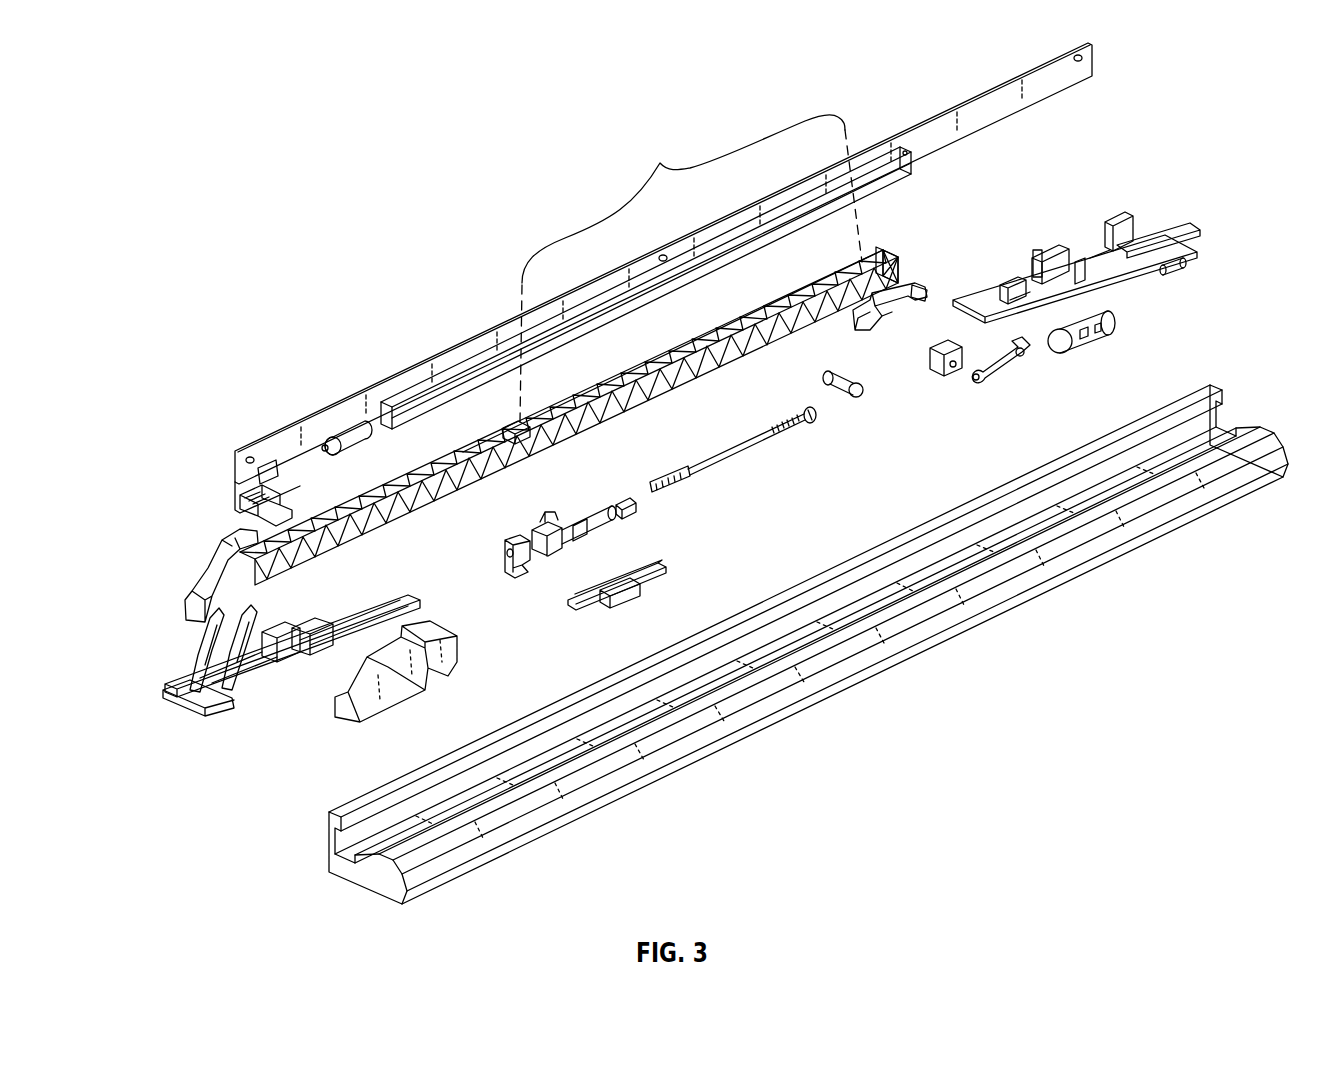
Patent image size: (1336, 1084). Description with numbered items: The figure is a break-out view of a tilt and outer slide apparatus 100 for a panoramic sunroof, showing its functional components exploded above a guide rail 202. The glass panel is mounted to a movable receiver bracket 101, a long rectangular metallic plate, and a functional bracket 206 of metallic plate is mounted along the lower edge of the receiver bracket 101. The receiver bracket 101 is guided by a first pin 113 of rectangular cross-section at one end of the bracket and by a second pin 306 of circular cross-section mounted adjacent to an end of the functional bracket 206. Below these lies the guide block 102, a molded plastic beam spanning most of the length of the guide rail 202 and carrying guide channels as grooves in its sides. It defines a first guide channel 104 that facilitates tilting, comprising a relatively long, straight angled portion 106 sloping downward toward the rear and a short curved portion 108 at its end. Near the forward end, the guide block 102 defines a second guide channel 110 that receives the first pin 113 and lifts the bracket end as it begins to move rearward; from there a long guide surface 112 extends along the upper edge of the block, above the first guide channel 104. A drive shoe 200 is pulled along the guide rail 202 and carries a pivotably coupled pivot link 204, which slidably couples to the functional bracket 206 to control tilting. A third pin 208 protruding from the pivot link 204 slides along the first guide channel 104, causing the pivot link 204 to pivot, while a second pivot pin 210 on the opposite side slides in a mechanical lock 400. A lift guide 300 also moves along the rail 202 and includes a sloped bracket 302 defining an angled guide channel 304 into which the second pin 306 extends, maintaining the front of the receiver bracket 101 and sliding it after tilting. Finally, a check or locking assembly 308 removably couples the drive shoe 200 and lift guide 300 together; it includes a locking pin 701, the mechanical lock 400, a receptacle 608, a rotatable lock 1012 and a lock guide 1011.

The tilt and outer slide apparatus 100 is at (203, 147).
The movable receiver bracket 101 is at (963, 98).
The guide block 102 is at (888, 268).
The first guide channel 104 is at (720, 368).
The angled portion 106 is at (660, 163).
The curved portion 108 is at (605, 399).
The second guide channel 110 is at (226, 564).
The long guide surface 112 is at (463, 452).
The first pin 113 is at (238, 505).
The drive shoe 200 is at (1150, 215).
The guide rail 202 is at (835, 688).
The pivot link 204 is at (930, 291).
The functional bracket 206 is at (412, 395).
The third pin 208 is at (855, 312).
The second pivot pin 210 is at (1010, 367).
The lift guide 300 is at (402, 593).
The sloped bracket 302 is at (197, 667).
The guide channel 304 is at (231, 666).
The second pin 306 is at (343, 449).
The check or locking assembly 308 is at (655, 502).
The mechanical lock 400 is at (540, 519).
The receptacle 608 is at (1088, 350).
The locking pin 701 is at (738, 450).
The lock guide 1011 is at (637, 588).
The rotatable lock 1012 is at (505, 567).